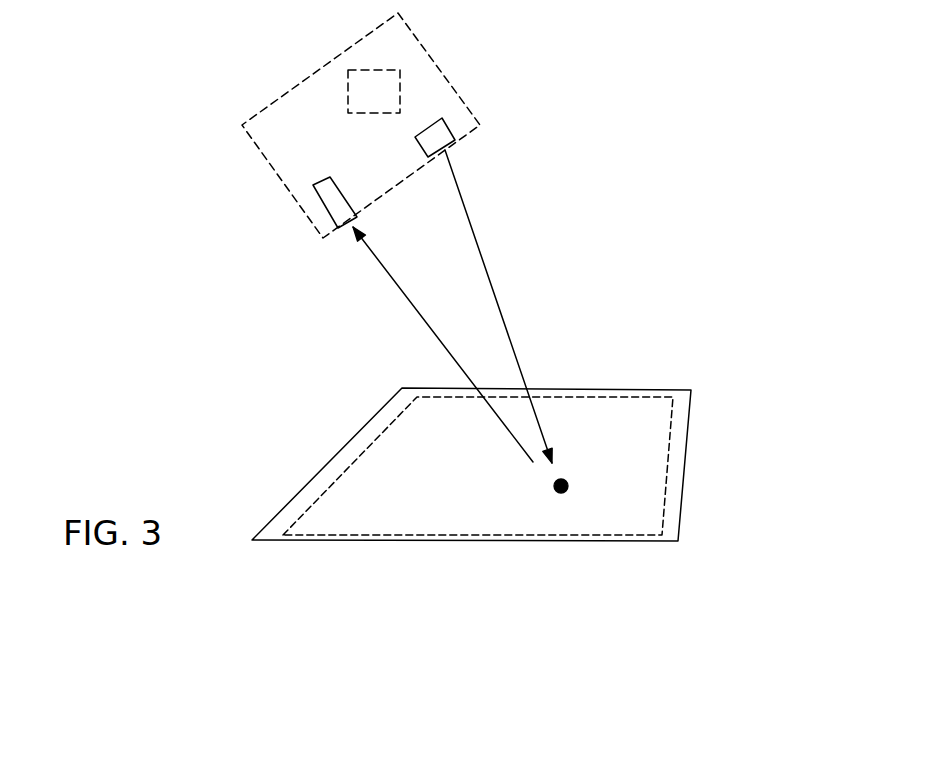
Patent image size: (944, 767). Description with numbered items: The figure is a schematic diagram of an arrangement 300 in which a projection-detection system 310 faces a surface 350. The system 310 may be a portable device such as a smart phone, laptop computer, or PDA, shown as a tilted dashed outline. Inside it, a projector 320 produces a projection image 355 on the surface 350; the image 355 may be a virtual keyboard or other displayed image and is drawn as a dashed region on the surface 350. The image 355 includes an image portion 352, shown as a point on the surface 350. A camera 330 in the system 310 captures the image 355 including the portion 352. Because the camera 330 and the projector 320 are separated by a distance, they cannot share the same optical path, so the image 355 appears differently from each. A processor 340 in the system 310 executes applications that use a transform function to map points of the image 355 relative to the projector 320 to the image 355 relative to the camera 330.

The system / arrangement 300 is at (826, 70).
The projection-detection system 310 is at (267, 159).
The projector 320 is at (448, 128).
The camera 330 is at (323, 207).
The processor 340 is at (349, 77).
The surface 350 is at (657, 390).
The image portion 352 is at (555, 490).
The projection image 355 is at (562, 398).